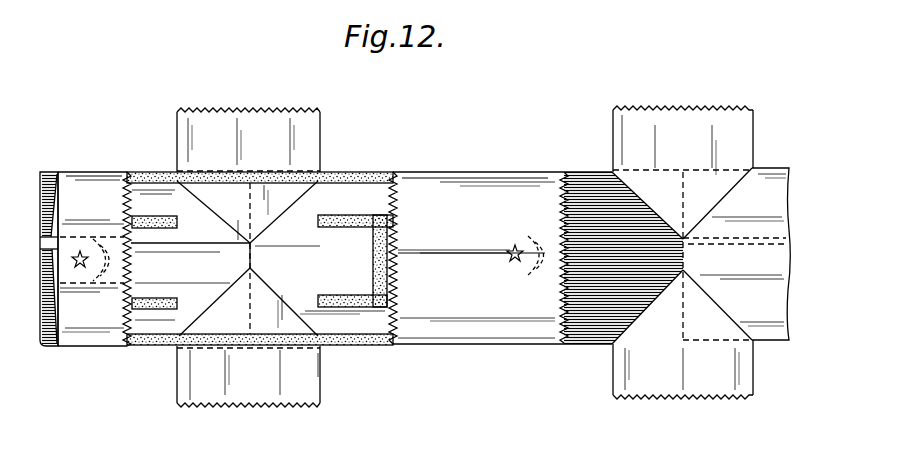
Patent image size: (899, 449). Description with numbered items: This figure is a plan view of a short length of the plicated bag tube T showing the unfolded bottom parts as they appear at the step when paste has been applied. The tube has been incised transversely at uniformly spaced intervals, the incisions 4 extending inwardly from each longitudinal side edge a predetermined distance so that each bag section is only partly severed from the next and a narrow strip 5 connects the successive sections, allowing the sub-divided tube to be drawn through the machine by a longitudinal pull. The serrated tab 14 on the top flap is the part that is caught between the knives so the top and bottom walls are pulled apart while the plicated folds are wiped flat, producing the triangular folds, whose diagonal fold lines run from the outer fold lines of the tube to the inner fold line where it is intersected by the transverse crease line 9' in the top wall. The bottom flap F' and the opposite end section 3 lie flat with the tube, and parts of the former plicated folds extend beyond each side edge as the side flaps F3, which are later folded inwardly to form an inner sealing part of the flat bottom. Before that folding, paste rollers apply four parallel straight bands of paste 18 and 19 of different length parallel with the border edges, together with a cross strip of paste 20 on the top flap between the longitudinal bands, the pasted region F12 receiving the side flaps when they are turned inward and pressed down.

The tube body T is at (475, 327).
The incisions 4 is at (128, 175).
The bands of paste 18 is at (346, 177).
The bands of paste 19 is at (317, 222).
The cross strip of paste 20 is at (372, 260).
The serrated tab 14 is at (405, 268).
The end cylinder section 3 is at (127, 273).
The narrow strip 5 is at (130, 258).
The side flaps F3 is at (650, 398).
The bottom flap F' is at (458, 276).
The transverse crease line 9' is at (463, 262).
The fold section F12 is at (375, 320).